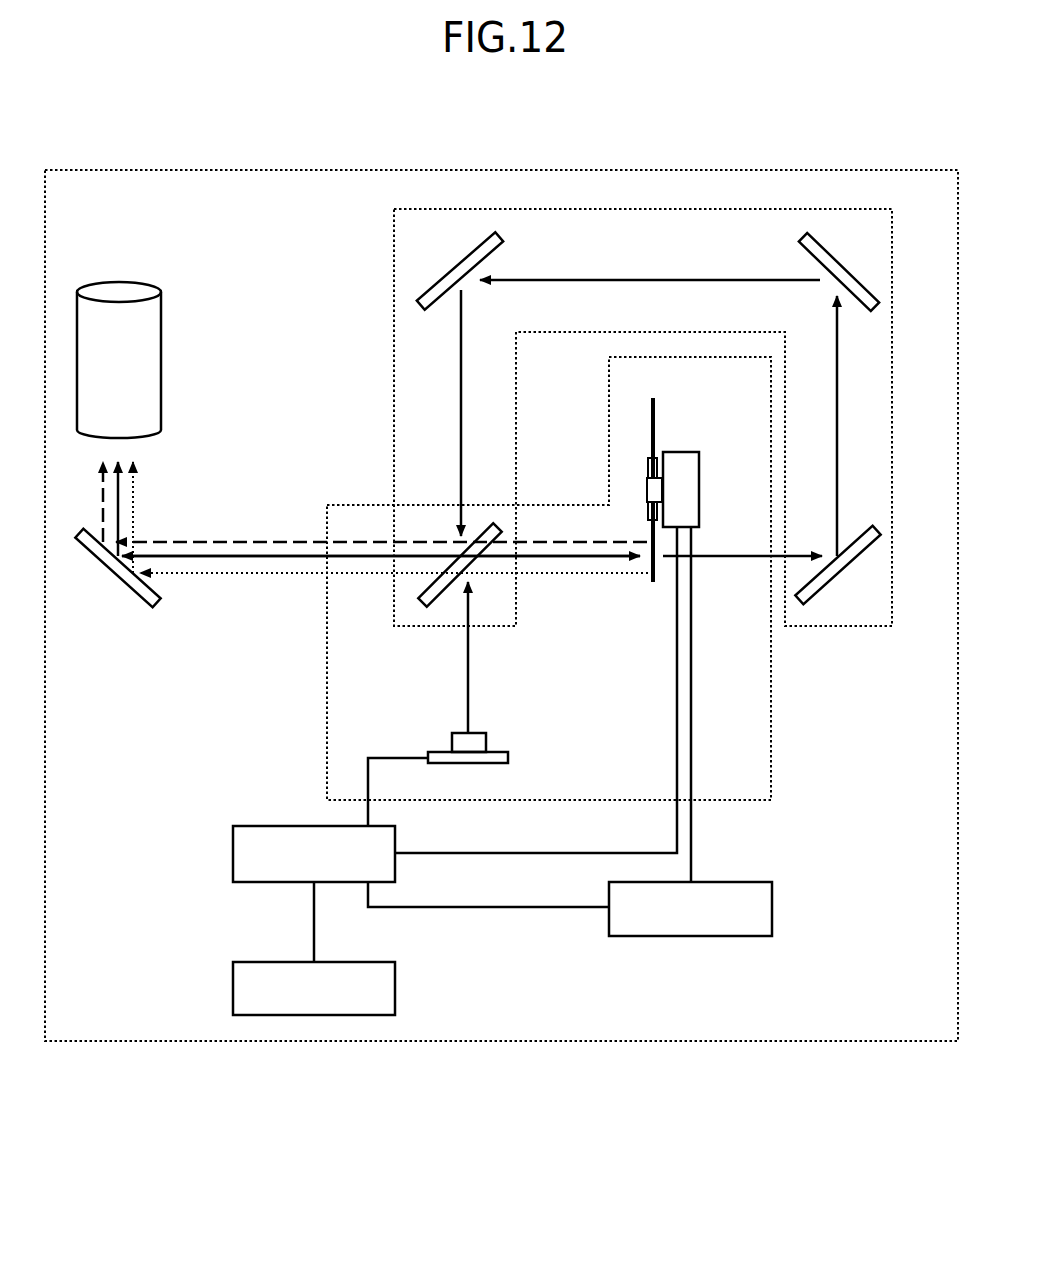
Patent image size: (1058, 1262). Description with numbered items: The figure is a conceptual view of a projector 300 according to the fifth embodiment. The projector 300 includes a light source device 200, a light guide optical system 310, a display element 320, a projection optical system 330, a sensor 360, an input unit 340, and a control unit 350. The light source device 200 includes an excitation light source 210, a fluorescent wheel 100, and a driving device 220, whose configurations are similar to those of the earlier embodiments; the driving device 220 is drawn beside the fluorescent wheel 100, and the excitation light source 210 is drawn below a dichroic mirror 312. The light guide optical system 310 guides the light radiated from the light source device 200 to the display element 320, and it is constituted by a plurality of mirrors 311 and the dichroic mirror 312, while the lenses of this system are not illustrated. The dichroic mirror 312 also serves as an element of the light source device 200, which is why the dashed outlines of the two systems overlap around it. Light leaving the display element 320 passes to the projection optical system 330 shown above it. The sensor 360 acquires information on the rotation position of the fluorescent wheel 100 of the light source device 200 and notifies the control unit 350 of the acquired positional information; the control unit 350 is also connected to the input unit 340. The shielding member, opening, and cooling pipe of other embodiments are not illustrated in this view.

The fluorescent wheel 100 is at (672, 424).
The light source device 200 is at (296, 666).
The excitation light source 210 is at (510, 758).
The driving device 220 is at (700, 484).
The projector 300 is at (503, 1092).
The light guide optical system 310 is at (358, 410).
The mirror 311 is at (488, 263).
The dichroic mirror 312 is at (442, 604).
The display element 320 is at (160, 602).
The projection optical system 330 is at (163, 362).
The input unit 340 is at (397, 990).
The control unit 350 is at (246, 886).
The sensor 360 is at (774, 910).